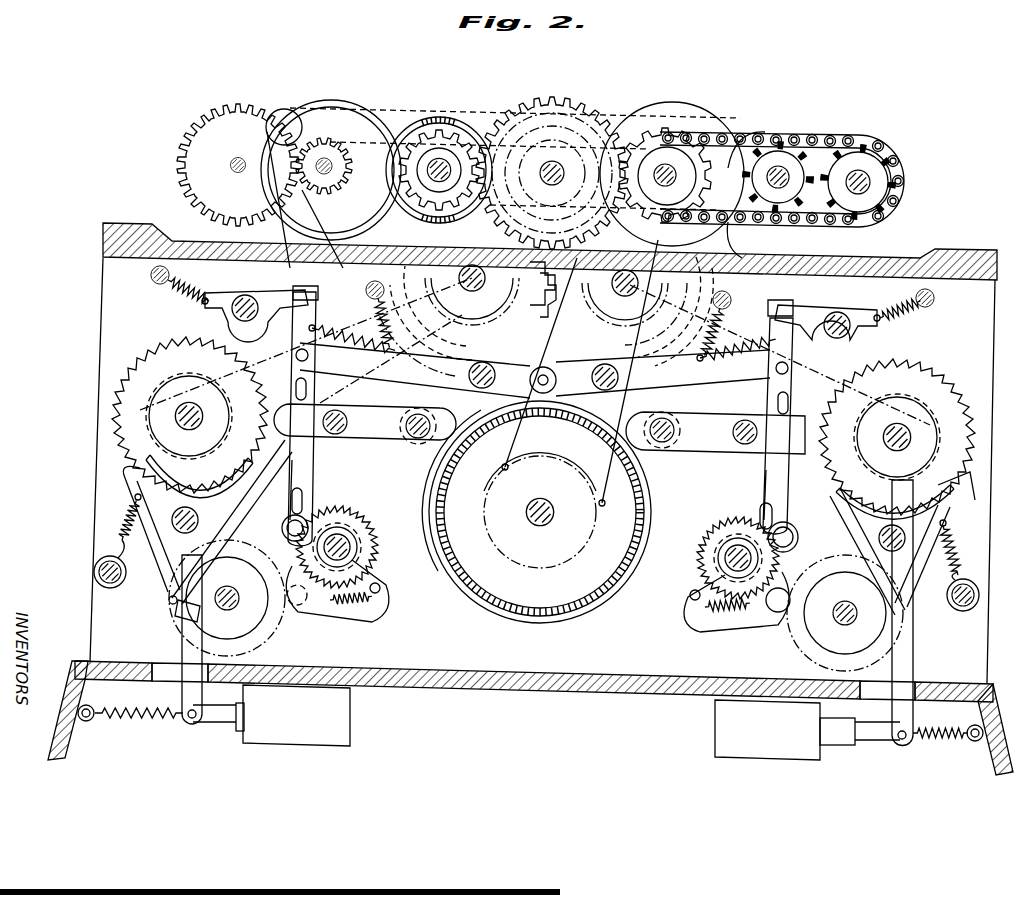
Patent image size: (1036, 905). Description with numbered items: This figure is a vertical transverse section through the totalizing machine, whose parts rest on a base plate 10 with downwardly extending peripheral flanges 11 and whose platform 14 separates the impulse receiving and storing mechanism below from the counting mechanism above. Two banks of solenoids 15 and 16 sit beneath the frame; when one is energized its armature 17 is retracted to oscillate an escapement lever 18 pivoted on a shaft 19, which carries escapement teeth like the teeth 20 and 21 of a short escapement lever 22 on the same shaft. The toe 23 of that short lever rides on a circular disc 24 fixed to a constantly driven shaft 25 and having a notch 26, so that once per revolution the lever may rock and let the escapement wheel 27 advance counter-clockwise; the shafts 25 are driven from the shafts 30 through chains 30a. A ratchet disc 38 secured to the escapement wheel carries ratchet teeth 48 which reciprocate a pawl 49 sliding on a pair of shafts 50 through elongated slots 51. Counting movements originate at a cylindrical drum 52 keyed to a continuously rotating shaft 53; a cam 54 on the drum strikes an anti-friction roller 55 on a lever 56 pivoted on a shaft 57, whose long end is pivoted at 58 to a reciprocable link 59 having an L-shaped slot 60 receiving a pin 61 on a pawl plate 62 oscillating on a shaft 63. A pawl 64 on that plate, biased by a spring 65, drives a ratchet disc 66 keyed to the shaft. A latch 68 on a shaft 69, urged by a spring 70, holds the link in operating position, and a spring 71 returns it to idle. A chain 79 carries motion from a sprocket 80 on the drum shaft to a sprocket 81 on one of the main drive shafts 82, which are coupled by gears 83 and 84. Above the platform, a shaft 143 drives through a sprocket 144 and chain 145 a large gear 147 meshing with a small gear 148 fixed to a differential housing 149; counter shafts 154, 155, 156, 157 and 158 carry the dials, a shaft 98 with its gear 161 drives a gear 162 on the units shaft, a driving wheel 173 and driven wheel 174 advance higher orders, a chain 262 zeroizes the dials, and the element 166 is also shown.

The base plate 10 is at (530, 690).
The peripheral flanges 11 is at (60, 705).
The platform 14 is at (200, 240).
The solenoids 15 is at (300, 735).
The solenoids 16 is at (758, 740).
The armature 17 is at (232, 724).
The escapement lever 18 is at (182, 650).
The shaft 19 is at (884, 528).
The escapement teeth 20 is at (130, 476).
The escapement teeth 21 is at (835, 490).
The short escapement lever 22 is at (536, 555).
The toe 23 is at (168, 601).
The circular disc 24 is at (536, 605).
The shaft 25 is at (232, 608).
The notch 26 is at (178, 612).
The escapement wheel 27 is at (135, 445).
The shafts 30 is at (190, 428).
The chains 30a is at (930, 488).
The ratchet disc 38 is at (165, 345).
The ratchet teeth 48 is at (292, 352).
The pawl 49 is at (372, 440).
The shafts 50 is at (415, 414).
The elongated slots 51 is at (506, 438).
The cylindrical drum 52 is at (470, 585).
The shaft 53 is at (541, 517).
The cam 54 is at (422, 492).
The anti-friction roller 55 is at (548, 395).
The lever 56 is at (535, 370).
The shaft 57 is at (478, 388).
The pivot 58 is at (309, 355).
The link 59 is at (312, 472).
The L-shaped slot 60 is at (304, 498).
The pin 61 is at (282, 525).
The pawl plate 62 is at (372, 606).
The shaft 63 is at (350, 540).
The pawl 64 is at (300, 608).
The spring 65 is at (356, 612).
The ratchet disc 66 is at (372, 550).
The latch 68 is at (280, 295).
The shaft 69 is at (240, 318).
The spring 70 is at (542, 292).
The spring 71 is at (350, 338).
The chain 79 is at (605, 492).
The sprocket 80 is at (566, 470).
The sprocket 81 is at (622, 294).
The main drive shafts 82 is at (470, 290).
The gear 83 is at (558, 295).
The gear 84 is at (531, 286).
The shaft 98 is at (243, 152).
The shaft 143 is at (872, 182).
The sprocket 144 is at (858, 182).
The chain 145 is at (738, 218).
The large gear 147 is at (582, 115).
The small gear 148 is at (458, 118).
The differential housing 149 is at (432, 117).
The shaft 154 is at (325, 180).
The shaft 155 is at (438, 180).
The shaft 156 is at (565, 168).
The shaft 157 is at (665, 182).
The shaft 158 is at (772, 184).
The gear 161 is at (200, 145).
The gear 162 is at (322, 150).
The disc 166 is at (376, 110).
The driving wheel 173 is at (678, 176).
The driven wheel 174 is at (748, 130).
The chain 262 is at (828, 128).